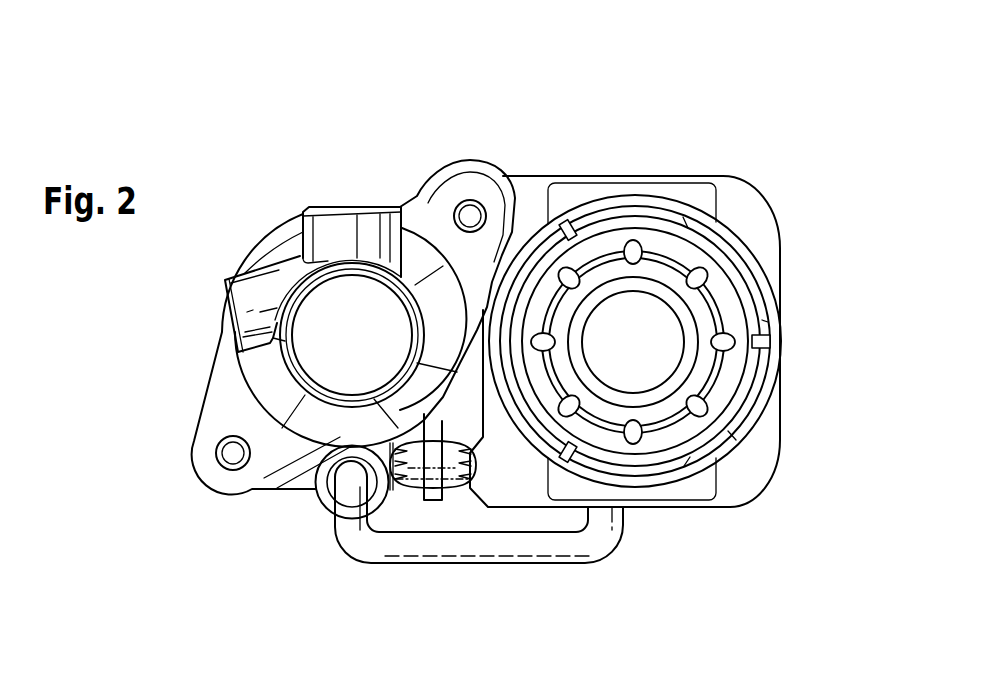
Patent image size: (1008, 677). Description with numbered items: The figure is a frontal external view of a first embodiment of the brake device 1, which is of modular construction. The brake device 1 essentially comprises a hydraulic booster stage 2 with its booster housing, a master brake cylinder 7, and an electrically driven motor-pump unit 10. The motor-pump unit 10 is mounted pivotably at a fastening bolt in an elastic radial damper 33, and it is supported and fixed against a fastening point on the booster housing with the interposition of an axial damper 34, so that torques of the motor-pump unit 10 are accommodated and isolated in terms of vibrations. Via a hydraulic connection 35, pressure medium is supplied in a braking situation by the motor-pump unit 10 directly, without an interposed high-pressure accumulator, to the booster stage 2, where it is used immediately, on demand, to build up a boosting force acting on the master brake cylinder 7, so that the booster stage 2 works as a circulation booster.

The brake device 1 is at (438, 96).
The hydraulic booster stage 2 is at (285, 508).
The master brake cylinder 7 is at (266, 388).
The motor-pump unit 10 is at (794, 343).
The elastic radial damper 33 is at (489, 175).
The axial damper 34 is at (452, 477).
The hydraulic connection 35 is at (557, 548).